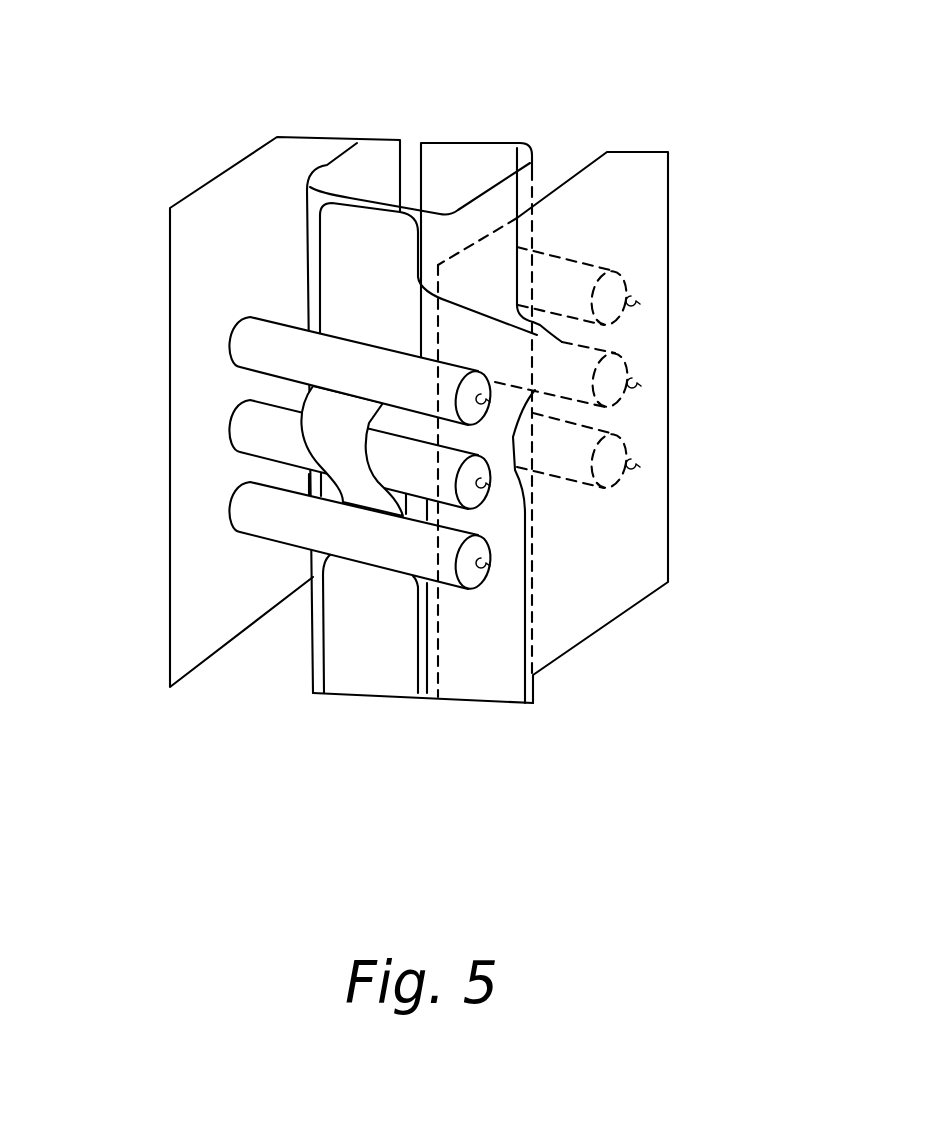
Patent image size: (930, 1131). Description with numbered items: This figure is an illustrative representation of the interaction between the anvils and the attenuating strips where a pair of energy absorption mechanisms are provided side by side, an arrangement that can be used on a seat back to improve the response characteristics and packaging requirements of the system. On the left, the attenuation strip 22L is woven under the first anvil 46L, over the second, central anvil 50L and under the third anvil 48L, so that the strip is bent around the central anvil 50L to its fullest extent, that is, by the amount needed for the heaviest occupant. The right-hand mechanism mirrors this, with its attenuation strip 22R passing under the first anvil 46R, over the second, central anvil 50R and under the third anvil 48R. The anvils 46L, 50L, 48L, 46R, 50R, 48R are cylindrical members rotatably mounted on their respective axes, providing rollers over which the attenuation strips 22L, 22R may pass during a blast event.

The attenuation strip 22L is at (362, 224).
The attenuation strip 22R is at (480, 169).
The first anvil 46L is at (247, 336).
The second, central anvil 50L is at (248, 416).
The third anvil 48L is at (248, 504).
The first anvil 46R is at (614, 298).
The second, central anvil 50R is at (616, 382).
The third anvil 48R is at (614, 464).